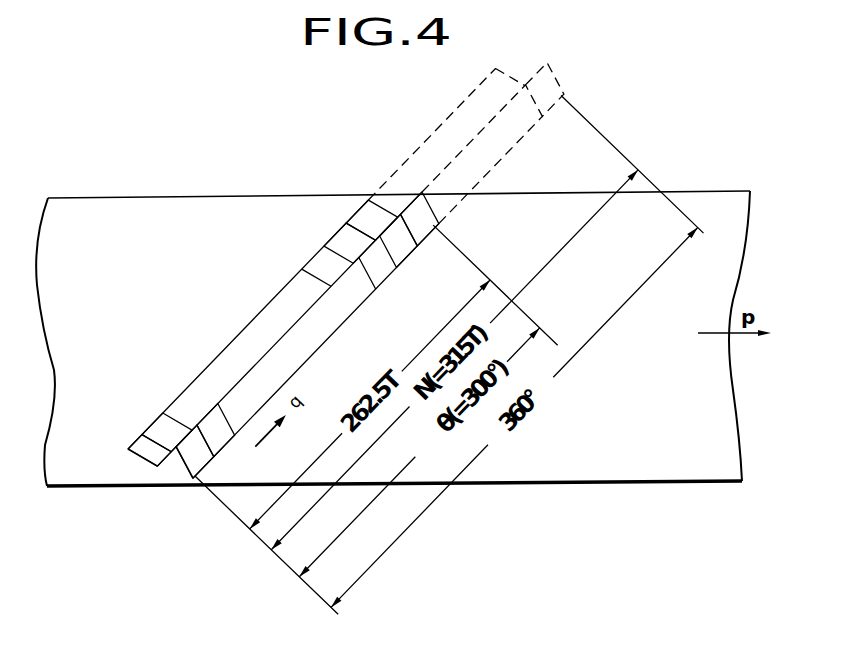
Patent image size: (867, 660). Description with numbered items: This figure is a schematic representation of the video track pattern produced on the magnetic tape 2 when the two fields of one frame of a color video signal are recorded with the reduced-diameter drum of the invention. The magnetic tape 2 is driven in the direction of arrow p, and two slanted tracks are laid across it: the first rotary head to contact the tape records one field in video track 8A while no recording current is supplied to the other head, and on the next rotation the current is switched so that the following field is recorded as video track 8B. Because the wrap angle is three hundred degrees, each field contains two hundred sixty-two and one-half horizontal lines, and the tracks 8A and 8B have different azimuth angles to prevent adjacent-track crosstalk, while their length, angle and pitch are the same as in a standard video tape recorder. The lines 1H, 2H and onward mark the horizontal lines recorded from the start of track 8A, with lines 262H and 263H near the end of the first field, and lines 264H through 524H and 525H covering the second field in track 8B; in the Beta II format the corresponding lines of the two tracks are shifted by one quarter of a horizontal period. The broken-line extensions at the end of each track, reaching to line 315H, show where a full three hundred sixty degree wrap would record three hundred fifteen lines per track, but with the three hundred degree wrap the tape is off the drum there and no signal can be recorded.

The magnetic tape 2 is at (158, 197).
The horizontal line 1H is at (200, 462).
The horizontal line 2H is at (227, 440).
The video track 8A is at (179, 468).
The video track 8B is at (134, 465).
The horizontal line 262H is at (404, 250).
The horizontal line 263H is at (136, 448).
The horizontal line 264H is at (153, 432).
The horizontal line 315H is at (552, 82).
The horizontal line 524H is at (343, 243).
The horizontal line 525H is at (363, 207).